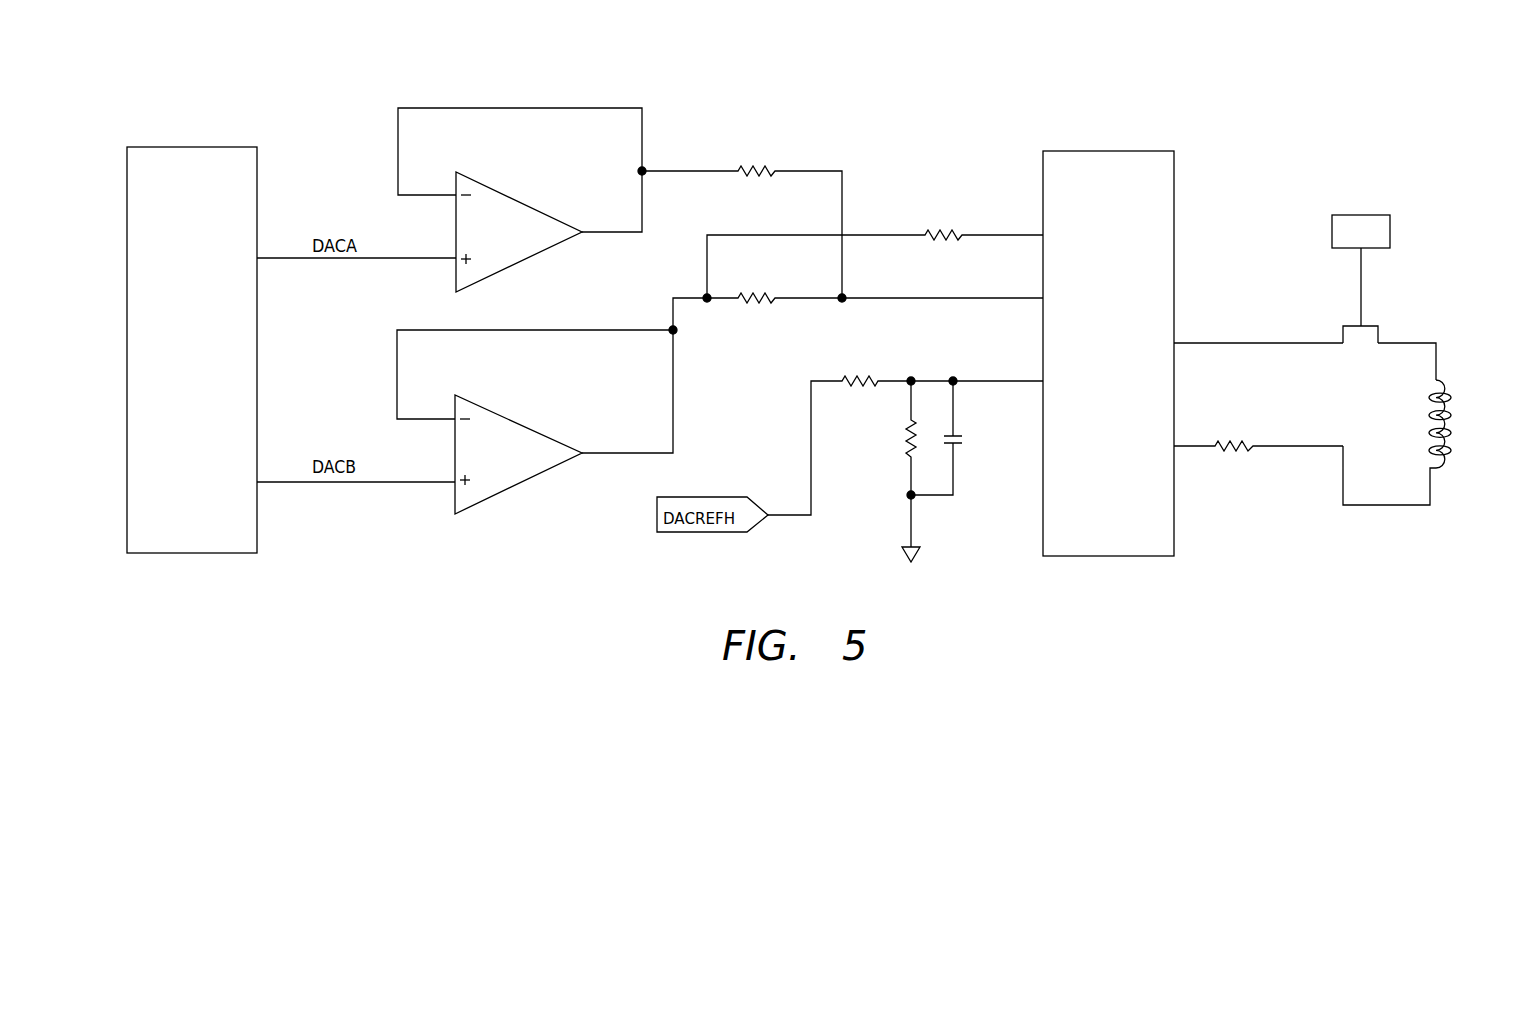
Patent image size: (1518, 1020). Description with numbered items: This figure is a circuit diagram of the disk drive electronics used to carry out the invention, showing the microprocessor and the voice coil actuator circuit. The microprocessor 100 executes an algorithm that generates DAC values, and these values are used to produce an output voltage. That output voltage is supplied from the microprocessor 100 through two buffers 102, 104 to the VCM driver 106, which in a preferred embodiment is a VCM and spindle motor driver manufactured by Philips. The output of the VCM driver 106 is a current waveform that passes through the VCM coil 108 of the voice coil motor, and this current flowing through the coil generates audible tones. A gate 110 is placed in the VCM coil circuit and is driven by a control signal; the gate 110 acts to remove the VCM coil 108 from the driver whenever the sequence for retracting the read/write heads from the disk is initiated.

The microprocessor 100 is at (172, 553).
The buffer 102 is at (533, 208).
The buffer 104 is at (531, 480).
The VCM driver 106 is at (1097, 556).
The VCM coil 108 is at (1447, 466).
The gate 110 is at (1366, 324).